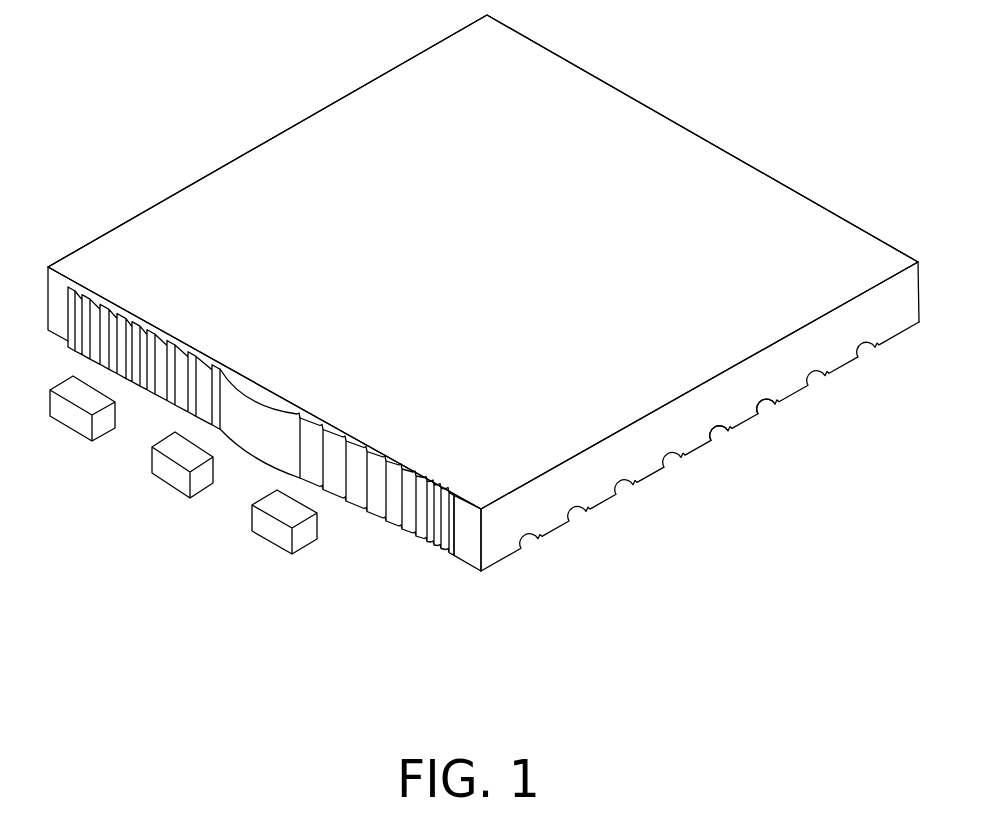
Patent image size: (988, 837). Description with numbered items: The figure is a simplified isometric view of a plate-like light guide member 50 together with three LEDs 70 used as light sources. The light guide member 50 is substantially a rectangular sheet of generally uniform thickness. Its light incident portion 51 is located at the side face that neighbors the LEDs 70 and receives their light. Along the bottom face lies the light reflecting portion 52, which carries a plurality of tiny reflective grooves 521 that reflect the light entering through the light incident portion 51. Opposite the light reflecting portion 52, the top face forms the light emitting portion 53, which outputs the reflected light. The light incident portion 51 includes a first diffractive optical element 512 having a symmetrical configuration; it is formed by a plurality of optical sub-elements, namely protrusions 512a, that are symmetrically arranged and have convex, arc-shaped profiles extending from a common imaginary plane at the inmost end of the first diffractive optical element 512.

The light guide member 50 is at (483, 314).
The light incident portion 51 is at (472, 550).
The light reflecting portion 52 is at (650, 473).
The reflective grooves 521 is at (763, 407).
The light emitting portion 53 is at (750, 188).
The first diffractive optical element 512 is at (257, 402).
The protrusions 512a is at (79, 287).
The LEDs 70 is at (165, 462).